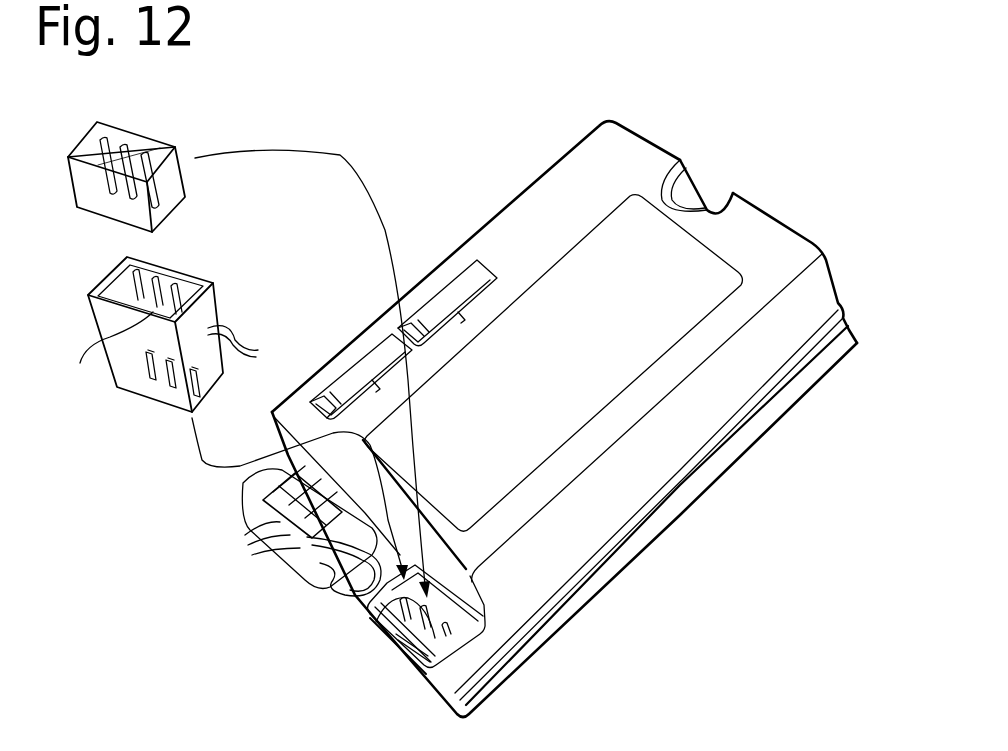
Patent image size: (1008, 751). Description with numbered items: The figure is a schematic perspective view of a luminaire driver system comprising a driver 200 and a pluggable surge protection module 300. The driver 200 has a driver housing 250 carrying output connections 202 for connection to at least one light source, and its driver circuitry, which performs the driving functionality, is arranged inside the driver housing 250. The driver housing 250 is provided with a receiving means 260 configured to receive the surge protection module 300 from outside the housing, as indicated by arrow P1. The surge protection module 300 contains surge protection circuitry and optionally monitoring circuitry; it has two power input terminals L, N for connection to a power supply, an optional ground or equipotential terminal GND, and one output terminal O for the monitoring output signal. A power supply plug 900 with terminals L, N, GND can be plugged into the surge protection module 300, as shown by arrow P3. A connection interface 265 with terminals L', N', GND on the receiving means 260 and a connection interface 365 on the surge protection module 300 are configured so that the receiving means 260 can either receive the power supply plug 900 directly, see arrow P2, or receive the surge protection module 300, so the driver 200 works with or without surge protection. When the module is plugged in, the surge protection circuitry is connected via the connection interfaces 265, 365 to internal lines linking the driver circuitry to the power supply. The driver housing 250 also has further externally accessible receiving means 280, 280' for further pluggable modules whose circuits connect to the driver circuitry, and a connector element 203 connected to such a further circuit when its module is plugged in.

The driver 200 is at (516, 172).
The driver housing 250 is at (620, 147).
The receiving means 260 is at (450, 613).
The connection interface 265 is at (346, 716).
The further receiving means 280 is at (361, 342).
The further receiving means 280' is at (447, 274).
The surge protection module 300 is at (243, 294).
The connection interface 365 is at (153, 434).
The power supply plug 900 is at (178, 190).
The output connections 202 is at (300, 580).
The connector element 203 is at (252, 555).
The arrow P1 is at (247, 444).
The arrow P2 is at (437, 444).
The arrow P3 is at (82, 264).
The output terminal O is at (215, 335).
The power input terminal L is at (91, 185).
The power input terminal N is at (100, 233).
The ground terminal GND is at (150, 148).
The connection interface terminal L' is at (345, 646).
The connection interface terminal N' is at (369, 671).